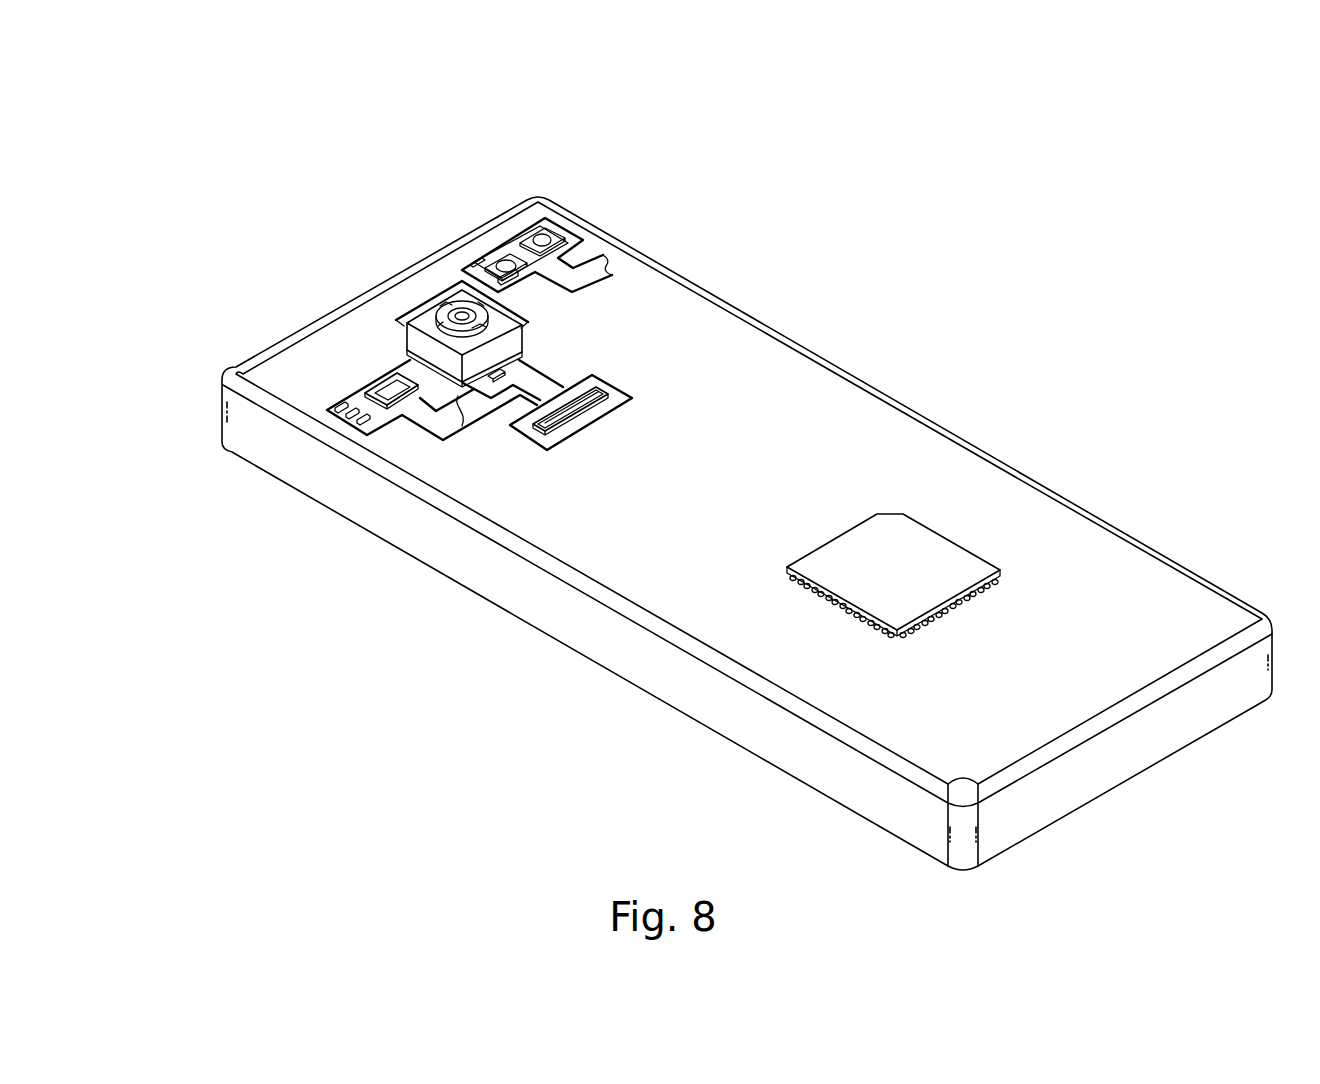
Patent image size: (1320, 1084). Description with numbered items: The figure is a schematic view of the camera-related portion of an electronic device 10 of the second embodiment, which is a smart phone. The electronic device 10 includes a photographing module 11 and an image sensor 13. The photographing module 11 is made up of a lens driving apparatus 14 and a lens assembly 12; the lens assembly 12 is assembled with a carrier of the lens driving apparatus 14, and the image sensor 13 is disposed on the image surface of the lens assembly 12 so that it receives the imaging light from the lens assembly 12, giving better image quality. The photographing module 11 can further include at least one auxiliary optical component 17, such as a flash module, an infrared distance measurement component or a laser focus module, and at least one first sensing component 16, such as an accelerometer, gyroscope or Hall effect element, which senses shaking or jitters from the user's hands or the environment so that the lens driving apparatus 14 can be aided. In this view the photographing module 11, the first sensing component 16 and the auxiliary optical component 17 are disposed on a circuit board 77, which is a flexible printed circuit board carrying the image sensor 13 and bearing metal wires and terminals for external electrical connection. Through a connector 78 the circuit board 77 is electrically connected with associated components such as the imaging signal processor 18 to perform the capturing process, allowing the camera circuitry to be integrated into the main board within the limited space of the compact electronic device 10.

The electronic device 10 is at (162, 85).
The photographing module 11 is at (400, 135).
The lens assembly 12 is at (462, 312).
The image sensor 13 is at (400, 352).
The lens driving apparatus 14 is at (437, 303).
The first sensing component 16 is at (520, 360).
The auxiliary optical component 17 is at (528, 247).
The imaging signal processor 18 is at (933, 547).
The circuit board 77 is at (522, 387).
The connector 78 is at (572, 425).